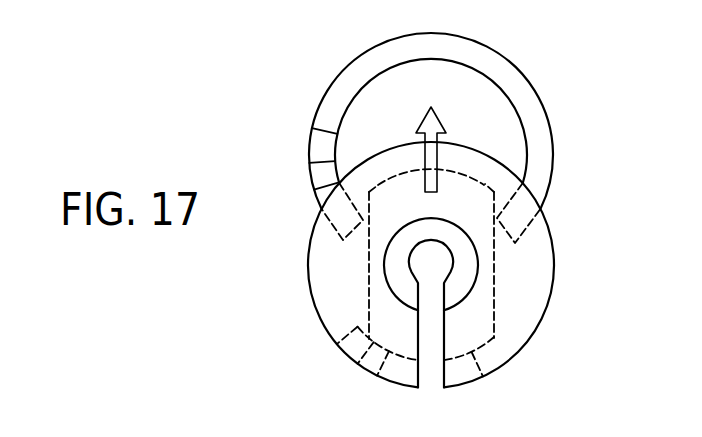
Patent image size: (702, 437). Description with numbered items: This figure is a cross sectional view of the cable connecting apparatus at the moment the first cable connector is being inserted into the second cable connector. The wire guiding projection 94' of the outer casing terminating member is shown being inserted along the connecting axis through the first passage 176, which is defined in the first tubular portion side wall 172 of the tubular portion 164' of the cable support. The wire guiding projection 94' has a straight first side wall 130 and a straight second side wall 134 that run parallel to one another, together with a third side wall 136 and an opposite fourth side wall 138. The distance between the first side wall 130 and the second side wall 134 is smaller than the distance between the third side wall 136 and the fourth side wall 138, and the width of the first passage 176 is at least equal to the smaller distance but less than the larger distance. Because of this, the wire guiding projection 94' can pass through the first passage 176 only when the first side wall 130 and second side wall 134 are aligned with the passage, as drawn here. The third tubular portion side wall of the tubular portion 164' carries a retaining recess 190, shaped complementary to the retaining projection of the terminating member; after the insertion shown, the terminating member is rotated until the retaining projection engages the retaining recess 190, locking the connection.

The first tubular portion side wall 172 is at (532, 82).
The retaining recess 190 is at (318, 152).
The first passage 176 is at (503, 243).
The tubular portion 164' is at (475, 247).
The first side wall 130 is at (494, 283).
The wire guiding projection 94' is at (419, 146).
The third side wall 136 is at (485, 184).
The second side wall 134 is at (367, 265).
The fourth side wall 138 is at (483, 376).